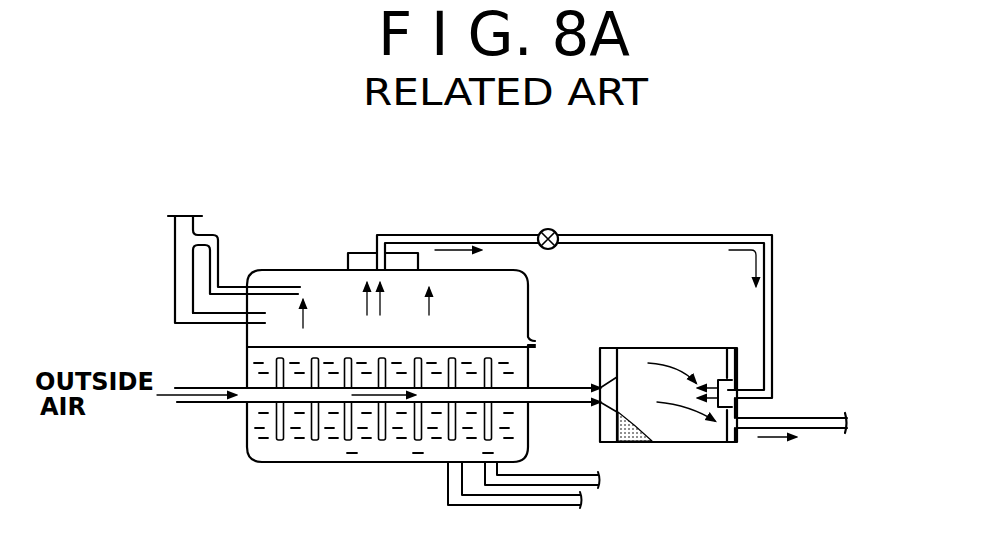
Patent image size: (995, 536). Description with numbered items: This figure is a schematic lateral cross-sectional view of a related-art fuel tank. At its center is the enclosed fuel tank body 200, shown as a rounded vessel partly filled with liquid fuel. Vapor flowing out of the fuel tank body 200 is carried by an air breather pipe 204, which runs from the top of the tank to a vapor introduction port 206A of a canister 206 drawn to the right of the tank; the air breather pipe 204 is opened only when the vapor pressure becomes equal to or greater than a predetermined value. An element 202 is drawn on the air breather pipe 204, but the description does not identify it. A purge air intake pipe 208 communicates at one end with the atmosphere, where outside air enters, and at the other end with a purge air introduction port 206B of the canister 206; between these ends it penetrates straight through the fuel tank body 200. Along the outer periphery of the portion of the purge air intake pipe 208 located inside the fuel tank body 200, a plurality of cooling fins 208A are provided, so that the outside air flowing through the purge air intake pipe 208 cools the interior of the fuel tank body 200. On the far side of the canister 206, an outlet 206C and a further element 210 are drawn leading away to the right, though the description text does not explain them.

The fuel tank body 200 is at (412, 463).
The valve 202 is at (548, 229).
The air breather pipe 204 is at (705, 233).
The canister 206 is at (673, 348).
The vapor introduction port 206A is at (752, 392).
The purge air introduction port 206B is at (590, 403).
The outlet pipe 206C is at (742, 433).
The purge air intake pipe 208 is at (227, 404).
The cooling fins 208A is at (313, 441).
The discharge pipe end 210 is at (833, 433).